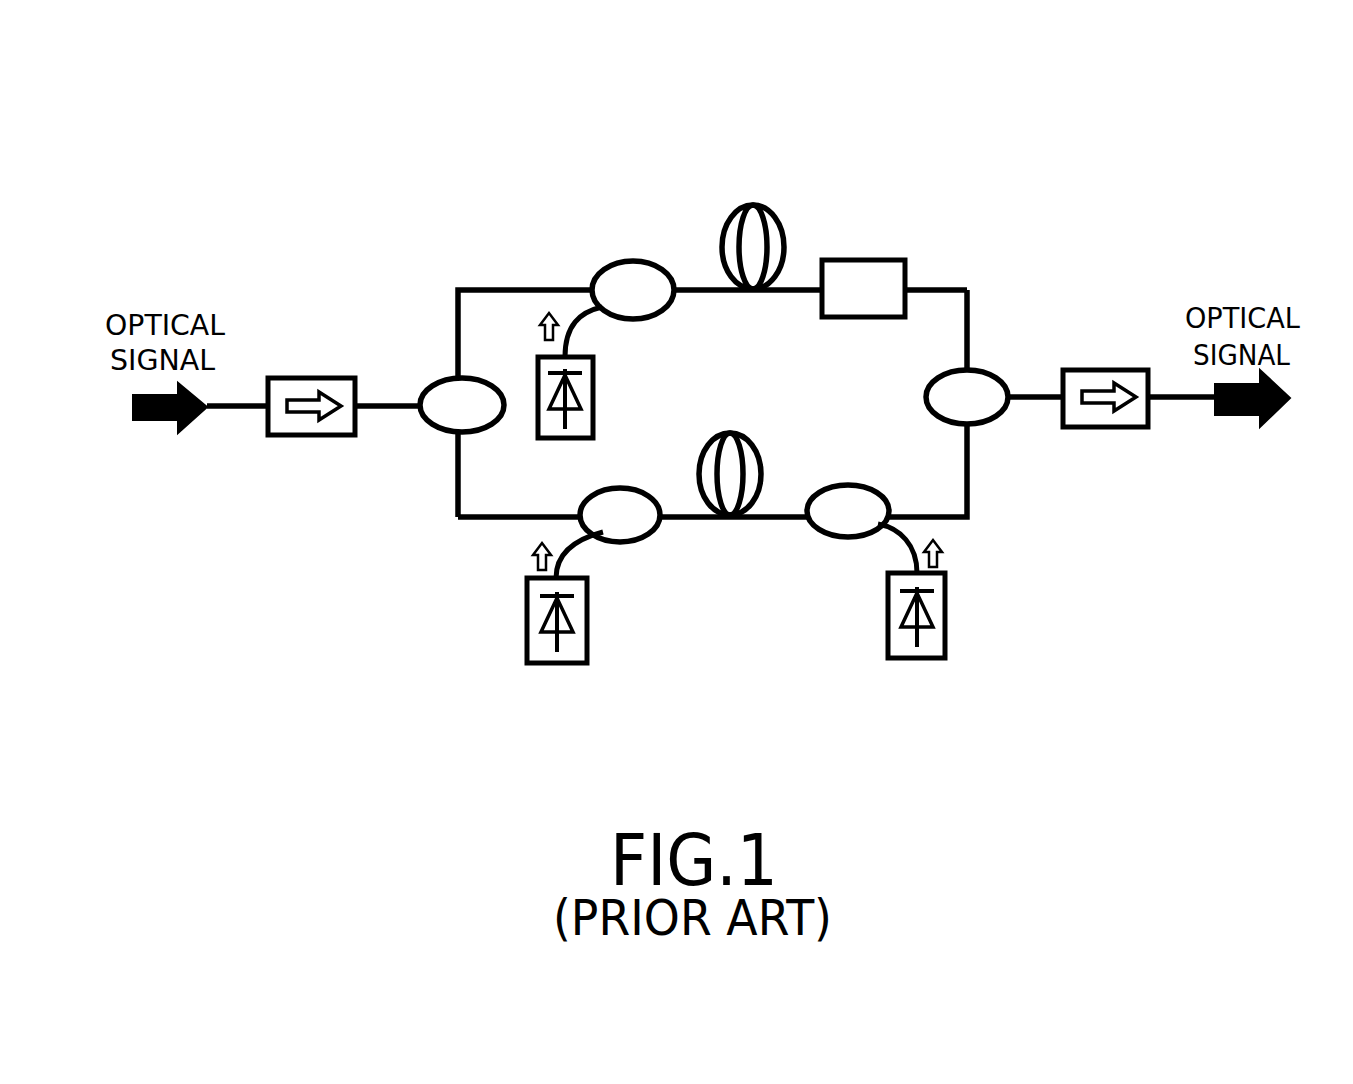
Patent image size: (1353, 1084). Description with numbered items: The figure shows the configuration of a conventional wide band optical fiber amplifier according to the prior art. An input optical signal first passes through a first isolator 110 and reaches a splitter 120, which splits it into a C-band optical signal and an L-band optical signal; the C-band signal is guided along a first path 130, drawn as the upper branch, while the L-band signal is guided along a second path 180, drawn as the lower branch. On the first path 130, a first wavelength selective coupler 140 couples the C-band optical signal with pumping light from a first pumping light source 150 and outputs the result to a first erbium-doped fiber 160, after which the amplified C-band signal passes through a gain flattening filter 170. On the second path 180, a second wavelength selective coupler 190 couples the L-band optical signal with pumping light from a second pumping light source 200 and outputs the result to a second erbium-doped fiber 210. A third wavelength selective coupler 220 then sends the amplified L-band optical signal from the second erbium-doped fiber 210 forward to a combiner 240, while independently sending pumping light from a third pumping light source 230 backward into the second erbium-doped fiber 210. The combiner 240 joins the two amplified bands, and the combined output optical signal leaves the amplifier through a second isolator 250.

The first isolator 110 is at (298, 376).
The splitter 120 is at (441, 431).
The first path 130 is at (472, 288).
The first wavelength selective coupler 140 is at (610, 265).
The first pumping light source 150 is at (594, 380).
The first erbium-doped fiber 160 is at (757, 205).
The gain flattening filter 170 is at (885, 258).
The second path 180 is at (457, 514).
The second wavelength selective coupler 190 is at (640, 542).
The second pumping light source 200 is at (527, 607).
The second erbium-doped fiber 210 is at (755, 447).
The third wavelength selective coupler 220 is at (832, 538).
The third pumping light source 230 is at (946, 604).
The combiner 240 is at (990, 372).
The second isolator 250 is at (1110, 370).